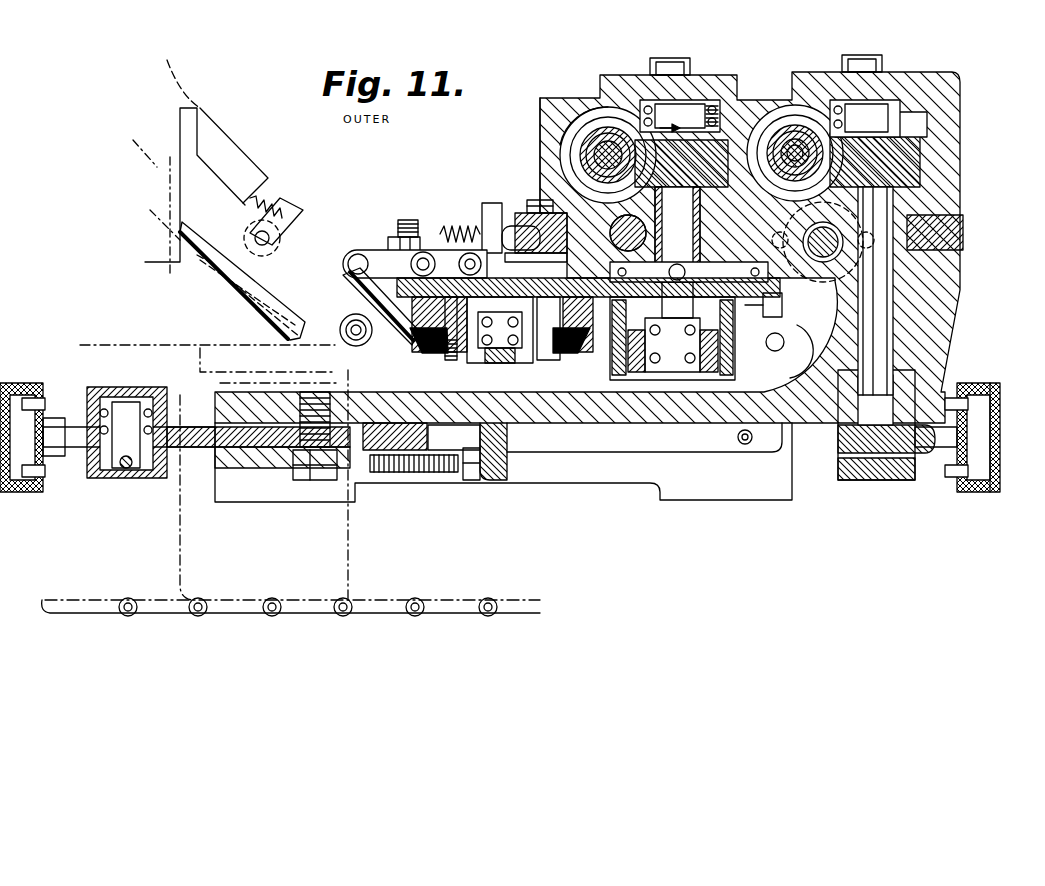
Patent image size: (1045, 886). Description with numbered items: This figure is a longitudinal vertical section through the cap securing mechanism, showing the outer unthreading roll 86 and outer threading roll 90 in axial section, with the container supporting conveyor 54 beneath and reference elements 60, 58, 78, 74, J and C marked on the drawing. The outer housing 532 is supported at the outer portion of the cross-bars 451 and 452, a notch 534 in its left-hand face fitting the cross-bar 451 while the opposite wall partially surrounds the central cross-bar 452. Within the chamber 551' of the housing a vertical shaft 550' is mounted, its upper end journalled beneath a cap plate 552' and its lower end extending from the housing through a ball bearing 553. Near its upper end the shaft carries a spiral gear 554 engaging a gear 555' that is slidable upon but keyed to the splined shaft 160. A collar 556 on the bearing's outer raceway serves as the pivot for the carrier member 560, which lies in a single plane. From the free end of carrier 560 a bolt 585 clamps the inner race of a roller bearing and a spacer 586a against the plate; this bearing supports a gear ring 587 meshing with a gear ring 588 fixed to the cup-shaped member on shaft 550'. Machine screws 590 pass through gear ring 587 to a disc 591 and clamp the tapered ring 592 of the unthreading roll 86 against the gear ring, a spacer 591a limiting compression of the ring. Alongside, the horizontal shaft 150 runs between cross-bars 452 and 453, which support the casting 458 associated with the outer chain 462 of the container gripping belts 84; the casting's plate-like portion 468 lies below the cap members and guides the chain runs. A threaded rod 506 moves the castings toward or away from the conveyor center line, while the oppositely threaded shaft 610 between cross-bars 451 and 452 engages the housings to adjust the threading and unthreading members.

The feed slide assembly 60 is at (160, 172).
The feed bar 58 is at (297, 268).
The cap plate 552' is at (655, 104).
The chamber 551' is at (672, 86).
The vertical shaft 550' is at (699, 86).
The splined shaft 160 is at (596, 150).
The horizontal shaft 150 is at (780, 130).
The housing 532 is at (555, 107).
The gear 555' is at (547, 129).
The casting 458 is at (950, 176).
The notch 534 is at (517, 212).
The cross-bar 451 is at (513, 250).
The spacer 586a is at (486, 255).
The collar 556 is at (610, 262).
The spiral gear 554 is at (677, 234).
The threaded shaft 610 is at (677, 265).
The bearing 553 is at (689, 254).
The cross-bar 452 is at (748, 184).
The cross-bar 453 is at (955, 223).
The threaded rod 506 is at (816, 254).
The gear ring 588 is at (782, 311).
The carrier member 560 is at (400, 288).
The roller 78 is at (378, 323).
The gear ring 587 is at (430, 350).
The unthreading roll 86 is at (445, 350).
The disc 591 is at (492, 320).
The bolt 585 is at (500, 350).
The machine screws 590 is at (550, 336).
The ring 592 is at (564, 360).
The threading roll 90 is at (760, 371).
The spacer 591a is at (385, 436).
The base frame 74 is at (561, 372).
The chain 462 is at (987, 377).
The container gripping endless belts 84 is at (973, 493).
The plate-like portion 468 is at (700, 413).
The reference axis J is at (352, 546).
The conveyor 54 is at (382, 599).
The reference point C is at (338, 356).